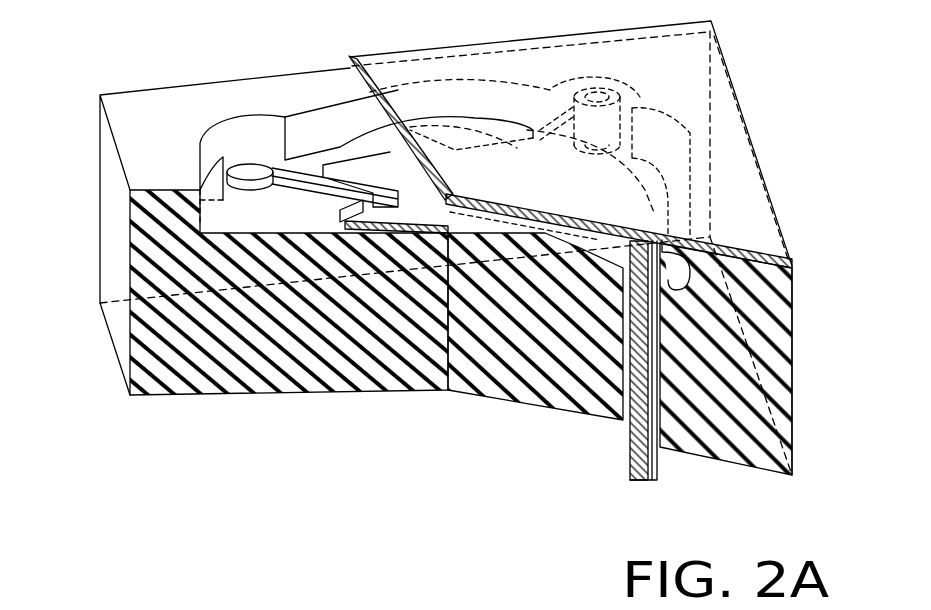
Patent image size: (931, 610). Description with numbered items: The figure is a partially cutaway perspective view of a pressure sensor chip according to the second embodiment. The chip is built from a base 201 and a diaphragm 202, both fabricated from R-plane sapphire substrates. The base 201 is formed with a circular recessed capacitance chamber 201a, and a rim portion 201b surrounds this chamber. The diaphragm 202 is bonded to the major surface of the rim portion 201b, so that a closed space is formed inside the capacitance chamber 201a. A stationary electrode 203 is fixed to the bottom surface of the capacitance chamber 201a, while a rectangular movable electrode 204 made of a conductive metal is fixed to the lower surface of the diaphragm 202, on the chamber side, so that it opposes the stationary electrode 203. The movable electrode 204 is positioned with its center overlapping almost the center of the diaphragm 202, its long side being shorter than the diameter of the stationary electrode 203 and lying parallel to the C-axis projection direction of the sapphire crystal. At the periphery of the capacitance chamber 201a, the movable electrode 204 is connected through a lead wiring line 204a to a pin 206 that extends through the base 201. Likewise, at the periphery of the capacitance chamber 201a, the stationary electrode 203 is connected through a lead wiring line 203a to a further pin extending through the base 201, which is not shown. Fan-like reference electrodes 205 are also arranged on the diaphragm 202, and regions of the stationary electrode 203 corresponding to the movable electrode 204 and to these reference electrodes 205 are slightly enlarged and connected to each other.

The base 201 is at (118, 330).
The capacitance chamber 201a is at (247, 210).
The rim portion 201b is at (172, 230).
The diaphragm 202 is at (733, 187).
The stationary electrode 203 is at (360, 233).
The lead wiring line 203a is at (313, 193).
The movable electrode 204 is at (497, 215).
The lead wiring line 204a is at (593, 240).
The side strip 205 is at (425, 160).
The pin 206 is at (643, 472).